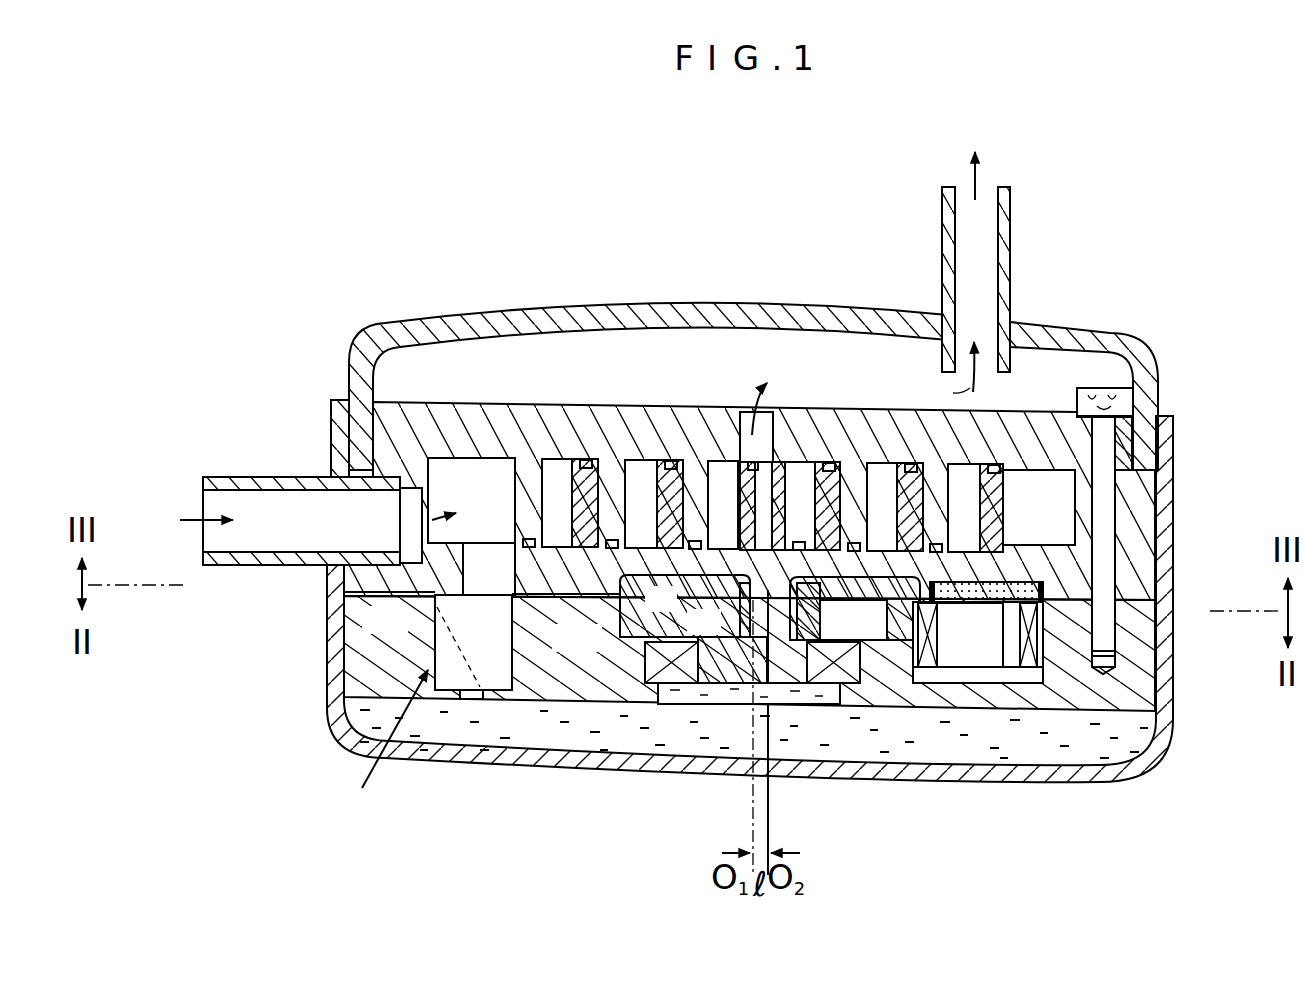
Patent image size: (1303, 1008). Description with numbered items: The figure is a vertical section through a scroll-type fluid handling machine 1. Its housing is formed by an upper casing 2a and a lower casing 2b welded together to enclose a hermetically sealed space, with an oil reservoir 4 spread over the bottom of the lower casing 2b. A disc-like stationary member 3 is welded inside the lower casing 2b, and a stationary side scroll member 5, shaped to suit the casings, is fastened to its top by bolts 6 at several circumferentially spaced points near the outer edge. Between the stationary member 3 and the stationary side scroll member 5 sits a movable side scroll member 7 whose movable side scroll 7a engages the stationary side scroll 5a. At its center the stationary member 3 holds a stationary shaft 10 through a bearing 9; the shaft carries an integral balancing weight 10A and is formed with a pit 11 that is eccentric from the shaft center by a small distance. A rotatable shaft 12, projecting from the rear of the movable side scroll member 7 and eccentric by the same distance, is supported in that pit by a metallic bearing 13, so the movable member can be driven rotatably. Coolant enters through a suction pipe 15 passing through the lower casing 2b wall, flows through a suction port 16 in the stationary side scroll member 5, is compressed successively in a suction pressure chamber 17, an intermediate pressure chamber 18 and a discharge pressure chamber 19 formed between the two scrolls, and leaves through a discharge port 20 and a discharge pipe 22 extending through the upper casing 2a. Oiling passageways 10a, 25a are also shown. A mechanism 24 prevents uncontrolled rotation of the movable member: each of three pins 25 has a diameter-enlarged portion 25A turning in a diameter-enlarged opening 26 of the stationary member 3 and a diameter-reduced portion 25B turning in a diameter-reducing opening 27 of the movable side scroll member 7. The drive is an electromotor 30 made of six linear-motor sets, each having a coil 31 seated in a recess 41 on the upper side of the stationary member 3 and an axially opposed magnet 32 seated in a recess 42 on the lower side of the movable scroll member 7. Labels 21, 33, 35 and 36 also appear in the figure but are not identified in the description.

The scroll-type fluid handling machine 1 is at (534, 260).
The upper casing 2a is at (363, 338).
The lower casing 2b is at (330, 733).
The stationary member 3 is at (343, 640).
The oil reservoir 4 is at (575, 738).
The stationary side scroll member 5 is at (1042, 427).
The stationary side scroll 5a is at (935, 495).
The bolts 6 is at (1107, 481).
The movable side scroll member 7 is at (1045, 584).
The movable side scroll 7a is at (1008, 499).
The bearing 9 is at (828, 683).
The stationary shaft 10 is at (719, 672).
The balancing weight 10A is at (638, 621).
The oiling passageway 10a is at (815, 674).
The pit 11 is at (803, 621).
The rotatable shaft 12 is at (755, 636).
The metallic bearing 13 is at (735, 605).
The suction pipe 15 is at (255, 477).
The suction port 16 is at (416, 494).
The suction pressure chamber 17 is at (562, 466).
The intermediate pressure chamber 18 is at (648, 466).
The discharge pressure chamber 19 is at (727, 466).
The discharge port 20 is at (748, 414).
The discharge chamber 21 is at (836, 338).
The discharge pipe 22 is at (940, 238).
The mechanism to prevent uncontrolled rotation 24 is at (334, 824).
The pins 25 is at (516, 650).
The diameter-enlarged portion 25A is at (452, 650).
The diameter-reduced portion 25B is at (500, 540).
The oiling passageway 25a is at (447, 680).
The diameter-enlarged opening 26 is at (434, 613).
The diameter-reducing opening 27 is at (494, 582).
The electromotor 30 is at (1052, 628).
The coil 31 is at (1052, 676).
The magnet 32 is at (1048, 591).
The bearing 33 is at (1003, 590).
The motor rotor 35 is at (973, 668).
The motor coil 36 is at (1028, 668).
The recess 41 is at (900, 708).
The recess 42 is at (969, 588).